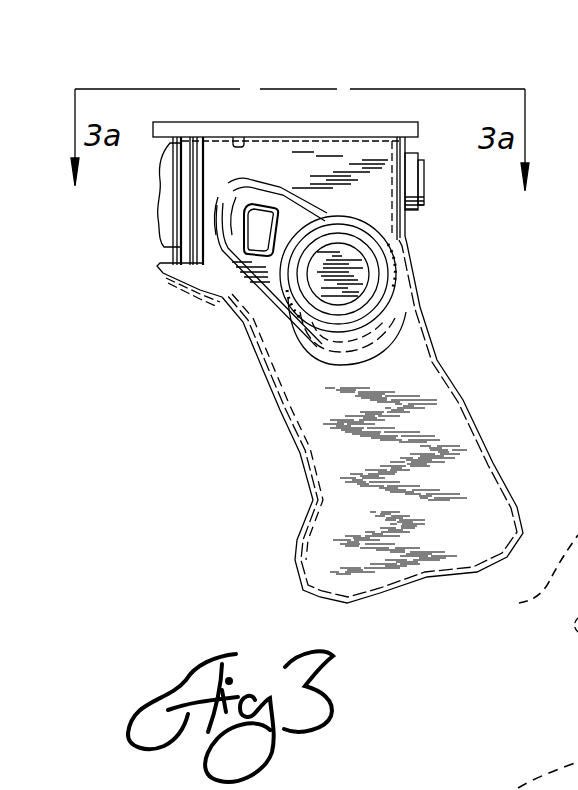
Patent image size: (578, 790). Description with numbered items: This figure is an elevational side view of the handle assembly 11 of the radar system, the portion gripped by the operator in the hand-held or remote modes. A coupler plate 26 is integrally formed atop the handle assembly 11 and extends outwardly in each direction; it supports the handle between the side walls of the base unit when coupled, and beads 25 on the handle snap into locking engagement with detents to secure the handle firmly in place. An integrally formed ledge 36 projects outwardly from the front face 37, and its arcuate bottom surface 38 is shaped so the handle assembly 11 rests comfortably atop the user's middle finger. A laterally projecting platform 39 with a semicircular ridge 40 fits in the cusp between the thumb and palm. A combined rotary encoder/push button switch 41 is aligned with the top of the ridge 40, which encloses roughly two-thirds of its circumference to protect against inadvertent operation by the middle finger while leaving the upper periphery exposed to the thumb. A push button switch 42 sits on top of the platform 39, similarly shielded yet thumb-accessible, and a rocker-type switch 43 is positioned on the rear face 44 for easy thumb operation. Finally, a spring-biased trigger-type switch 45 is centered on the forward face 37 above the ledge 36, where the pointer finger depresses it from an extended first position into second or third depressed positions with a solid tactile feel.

The handle assembly 11 is at (512, 777).
The bead 25 is at (236, 137).
The coupler plate 26 is at (348, 122).
The ledge 36 is at (157, 262).
The front face 37 is at (292, 454).
The arcuate bottom surface 38 is at (198, 287).
The platform 39 is at (275, 293).
The semicircular ridge 40 is at (420, 305).
The rotary encoder/push button switch 41 is at (405, 240).
The push button switch 42 is at (245, 205).
The rocker-type switch 43 is at (424, 177).
The rear face 44 is at (445, 362).
The trigger-type switch 45 is at (160, 227).